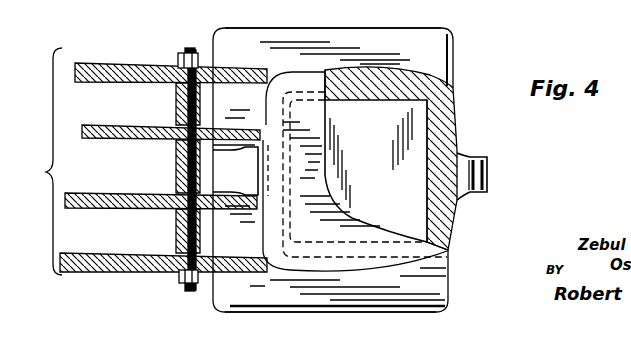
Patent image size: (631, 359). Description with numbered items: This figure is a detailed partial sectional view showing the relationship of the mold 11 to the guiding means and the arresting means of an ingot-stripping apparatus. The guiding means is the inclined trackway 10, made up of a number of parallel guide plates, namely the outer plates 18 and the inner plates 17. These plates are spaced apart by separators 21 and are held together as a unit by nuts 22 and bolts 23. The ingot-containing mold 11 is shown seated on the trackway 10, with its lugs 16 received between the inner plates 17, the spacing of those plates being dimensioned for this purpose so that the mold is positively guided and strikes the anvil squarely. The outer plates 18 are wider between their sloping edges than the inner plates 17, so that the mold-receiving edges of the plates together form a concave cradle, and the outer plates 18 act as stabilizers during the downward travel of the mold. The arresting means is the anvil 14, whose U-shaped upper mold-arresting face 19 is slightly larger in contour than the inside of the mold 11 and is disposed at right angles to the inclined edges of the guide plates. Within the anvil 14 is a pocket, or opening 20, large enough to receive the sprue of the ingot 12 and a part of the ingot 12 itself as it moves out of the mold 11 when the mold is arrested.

The inclined trackway 10 is at (44, 161).
The mold 11 is at (445, 112).
The ingot 12 is at (376, 156).
The anvil 14 is at (455, 58).
The lugs 16 is at (506, 172).
The inner plates 17 is at (103, 140).
The outer plates 18 is at (106, 64).
The mold-arresting face 19 is at (434, 42).
The pocket 20 is at (440, 150).
The separators 21 is at (176, 105).
The nuts 22 is at (178, 60).
The bolts 23 is at (190, 48).